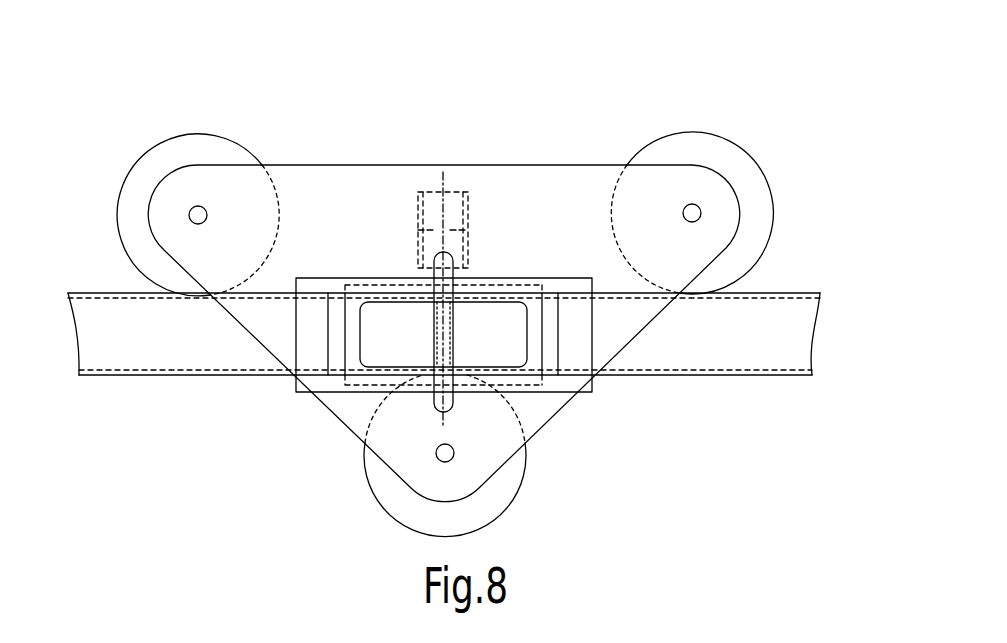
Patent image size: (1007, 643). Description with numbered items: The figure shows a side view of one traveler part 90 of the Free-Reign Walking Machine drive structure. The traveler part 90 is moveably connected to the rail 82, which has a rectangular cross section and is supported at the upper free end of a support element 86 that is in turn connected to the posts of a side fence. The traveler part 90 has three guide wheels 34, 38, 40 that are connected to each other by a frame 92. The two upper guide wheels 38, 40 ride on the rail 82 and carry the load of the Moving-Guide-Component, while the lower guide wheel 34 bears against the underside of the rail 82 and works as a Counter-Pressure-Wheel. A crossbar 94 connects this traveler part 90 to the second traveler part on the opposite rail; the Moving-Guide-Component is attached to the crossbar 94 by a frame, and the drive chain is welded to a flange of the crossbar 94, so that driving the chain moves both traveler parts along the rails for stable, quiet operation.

The traveler part 90 is at (435, 279).
The frame 92 is at (517, 165).
The guide wheel 40 is at (162, 148).
The guide wheel 38 is at (708, 143).
The guide wheel 34 is at (492, 507).
The crossbar 94 is at (432, 182).
The support element 86 is at (317, 343).
The rail 82 is at (702, 360).